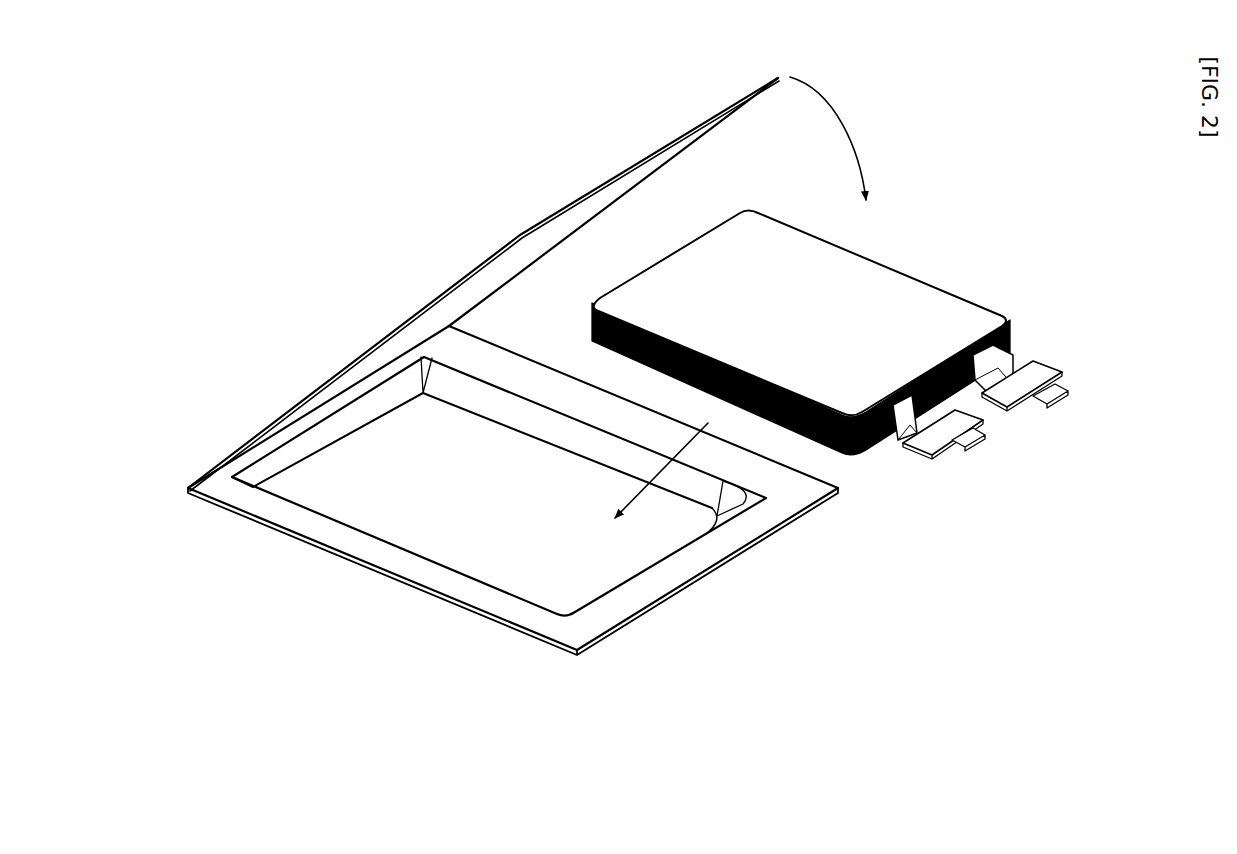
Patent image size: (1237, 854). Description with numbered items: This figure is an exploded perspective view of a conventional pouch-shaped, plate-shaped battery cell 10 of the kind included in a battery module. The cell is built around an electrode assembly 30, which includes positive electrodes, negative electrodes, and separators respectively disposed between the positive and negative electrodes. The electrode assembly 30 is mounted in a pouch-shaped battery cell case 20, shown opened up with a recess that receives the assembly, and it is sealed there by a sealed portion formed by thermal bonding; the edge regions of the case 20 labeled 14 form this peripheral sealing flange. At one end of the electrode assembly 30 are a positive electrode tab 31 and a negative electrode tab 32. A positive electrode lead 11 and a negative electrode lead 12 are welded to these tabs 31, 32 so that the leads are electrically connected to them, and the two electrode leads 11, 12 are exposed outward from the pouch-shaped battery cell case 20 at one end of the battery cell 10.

The plate-shaped battery cell 10 is at (197, 173).
The pouch-shaped battery cell case 20 is at (343, 357).
The flange portion 14 is at (363, 552).
The electrode assembly 30 is at (853, 305).
The positive electrode tab 31 is at (993, 372).
The negative electrode tab 32 is at (905, 420).
The positive electrode lead 11 is at (1062, 392).
The negative electrode lead 12 is at (964, 447).